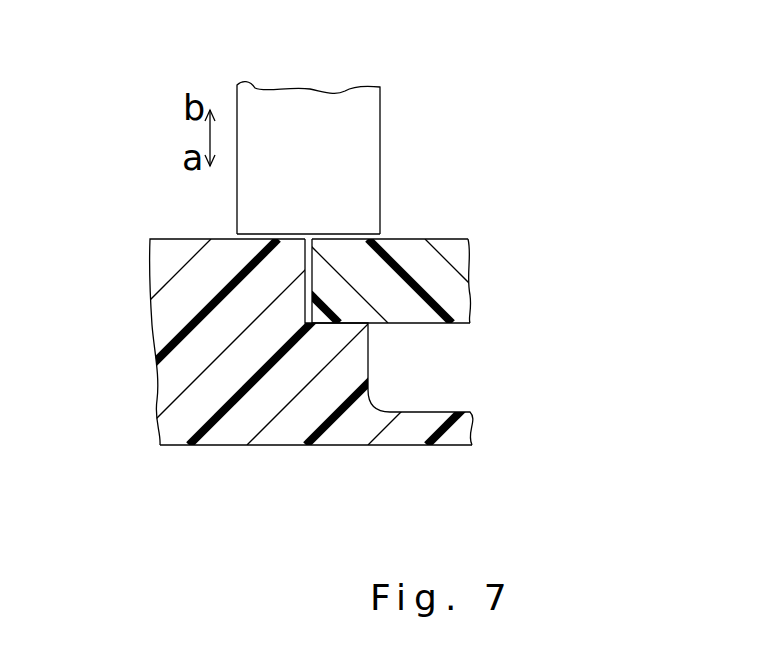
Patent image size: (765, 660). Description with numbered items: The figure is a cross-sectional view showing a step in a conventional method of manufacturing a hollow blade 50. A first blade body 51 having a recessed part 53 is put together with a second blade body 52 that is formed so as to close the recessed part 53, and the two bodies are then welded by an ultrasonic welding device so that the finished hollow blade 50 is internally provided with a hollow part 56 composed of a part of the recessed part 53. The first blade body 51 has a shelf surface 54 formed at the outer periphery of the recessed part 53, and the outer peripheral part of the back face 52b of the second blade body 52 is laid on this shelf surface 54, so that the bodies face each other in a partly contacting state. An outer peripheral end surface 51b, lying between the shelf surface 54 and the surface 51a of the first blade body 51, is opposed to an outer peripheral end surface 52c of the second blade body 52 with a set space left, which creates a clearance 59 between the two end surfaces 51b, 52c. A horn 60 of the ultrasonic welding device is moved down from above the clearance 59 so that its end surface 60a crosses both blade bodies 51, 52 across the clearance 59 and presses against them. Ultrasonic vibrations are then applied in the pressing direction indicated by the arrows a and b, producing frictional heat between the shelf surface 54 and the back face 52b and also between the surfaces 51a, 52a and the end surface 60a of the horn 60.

The hollow blade 50 is at (173, 447).
The first blade body 51 is at (188, 298).
The surface of the first blade body 51a is at (173, 238).
The outer peripheral end surface of the first blade body 51b is at (341, 302).
The second blade body 52 is at (418, 232).
The surface of the second blade body 52a is at (452, 238).
The back face of the second blade body 52b is at (423, 324).
The outer peripheral end surface of the second blade body 52c is at (307, 318).
The recessed part 53 is at (417, 412).
The shelf surface 54 is at (358, 323).
The hollow part 56 is at (412, 388).
The clearance 59 is at (305, 289).
The horn 60 is at (364, 128).
The end surface of the horn 60a is at (350, 239).